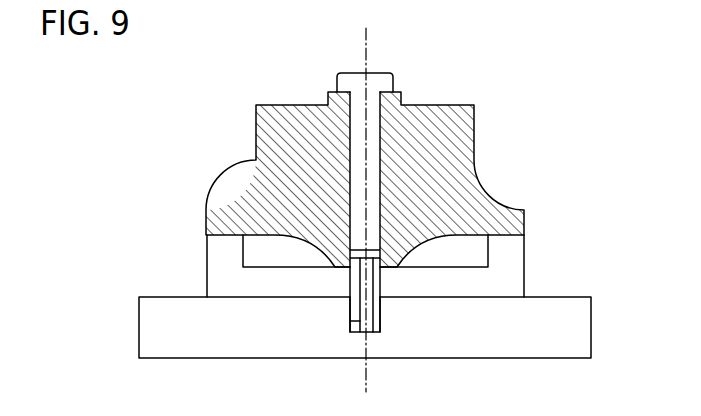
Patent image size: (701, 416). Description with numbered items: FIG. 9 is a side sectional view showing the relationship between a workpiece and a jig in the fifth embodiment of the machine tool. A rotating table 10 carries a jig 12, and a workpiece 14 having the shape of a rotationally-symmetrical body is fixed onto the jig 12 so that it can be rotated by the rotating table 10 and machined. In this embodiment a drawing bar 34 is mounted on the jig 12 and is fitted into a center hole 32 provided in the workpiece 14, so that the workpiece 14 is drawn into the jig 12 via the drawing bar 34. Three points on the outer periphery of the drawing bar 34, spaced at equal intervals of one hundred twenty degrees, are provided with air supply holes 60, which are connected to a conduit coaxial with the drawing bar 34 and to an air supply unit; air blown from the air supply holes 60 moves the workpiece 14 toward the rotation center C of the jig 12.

The rotation center C is at (362, 60).
The rotating table 10 is at (577, 330).
The jig 12 is at (505, 263).
The workpiece 14 is at (275, 138).
The center hole 32 is at (352, 204).
The drawing bar 34 is at (373, 305).
The air supply holes 60 is at (361, 321).